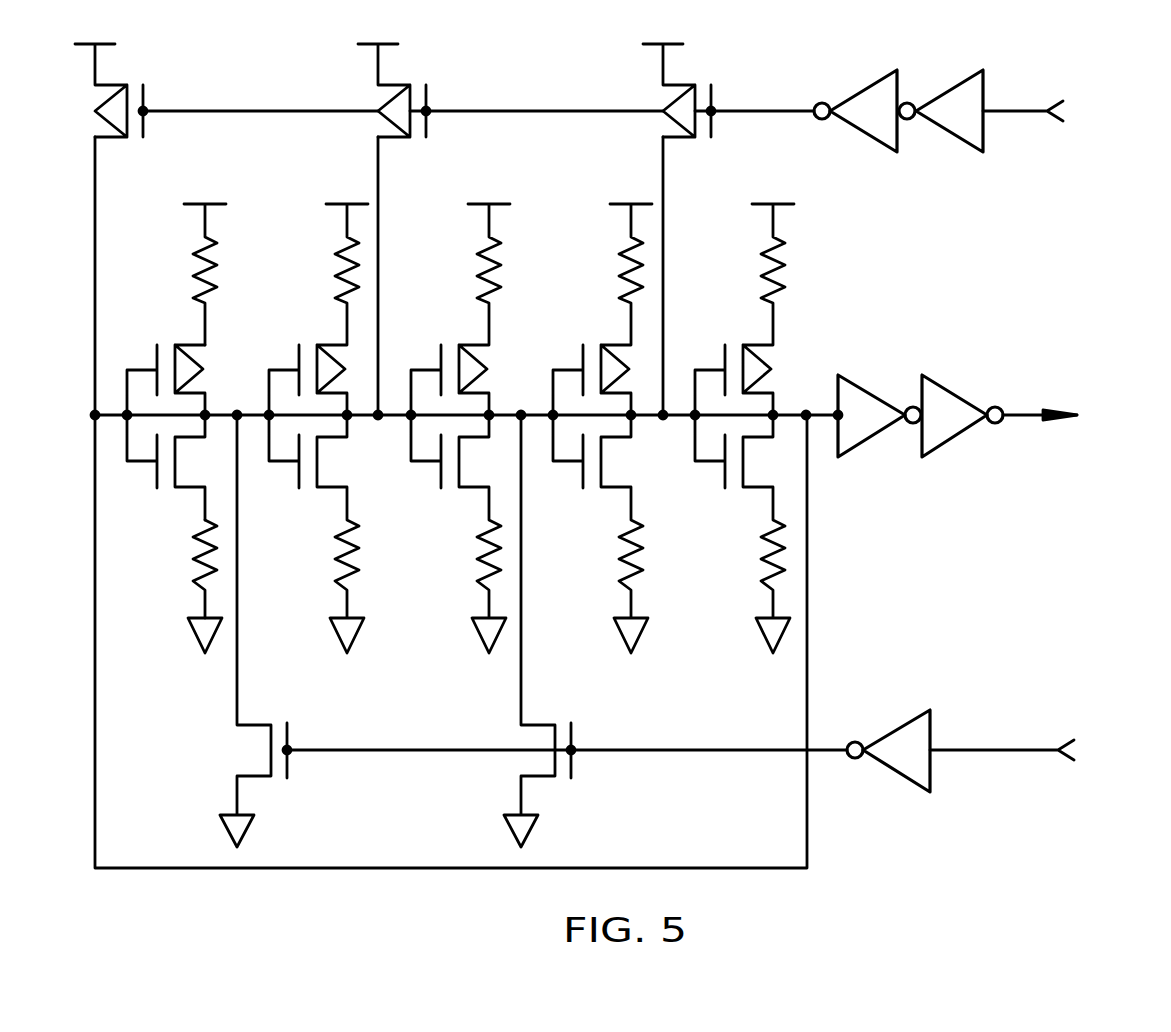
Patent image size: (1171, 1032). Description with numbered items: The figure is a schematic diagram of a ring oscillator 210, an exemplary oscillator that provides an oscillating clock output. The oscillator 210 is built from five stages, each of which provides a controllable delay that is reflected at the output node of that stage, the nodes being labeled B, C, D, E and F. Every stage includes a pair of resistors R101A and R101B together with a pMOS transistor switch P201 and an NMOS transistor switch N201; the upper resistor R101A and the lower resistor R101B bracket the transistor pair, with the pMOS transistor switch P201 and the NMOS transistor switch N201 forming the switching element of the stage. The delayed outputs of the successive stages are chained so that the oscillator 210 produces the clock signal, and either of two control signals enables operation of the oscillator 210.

The resistor R101A is at (165, 274).
The pMOS transistor switch P201 is at (162, 363).
The NMOS transistor switch N201 is at (162, 471).
The resistor R101B is at (161, 569).
The ring oscillator 210 is at (622, 460).